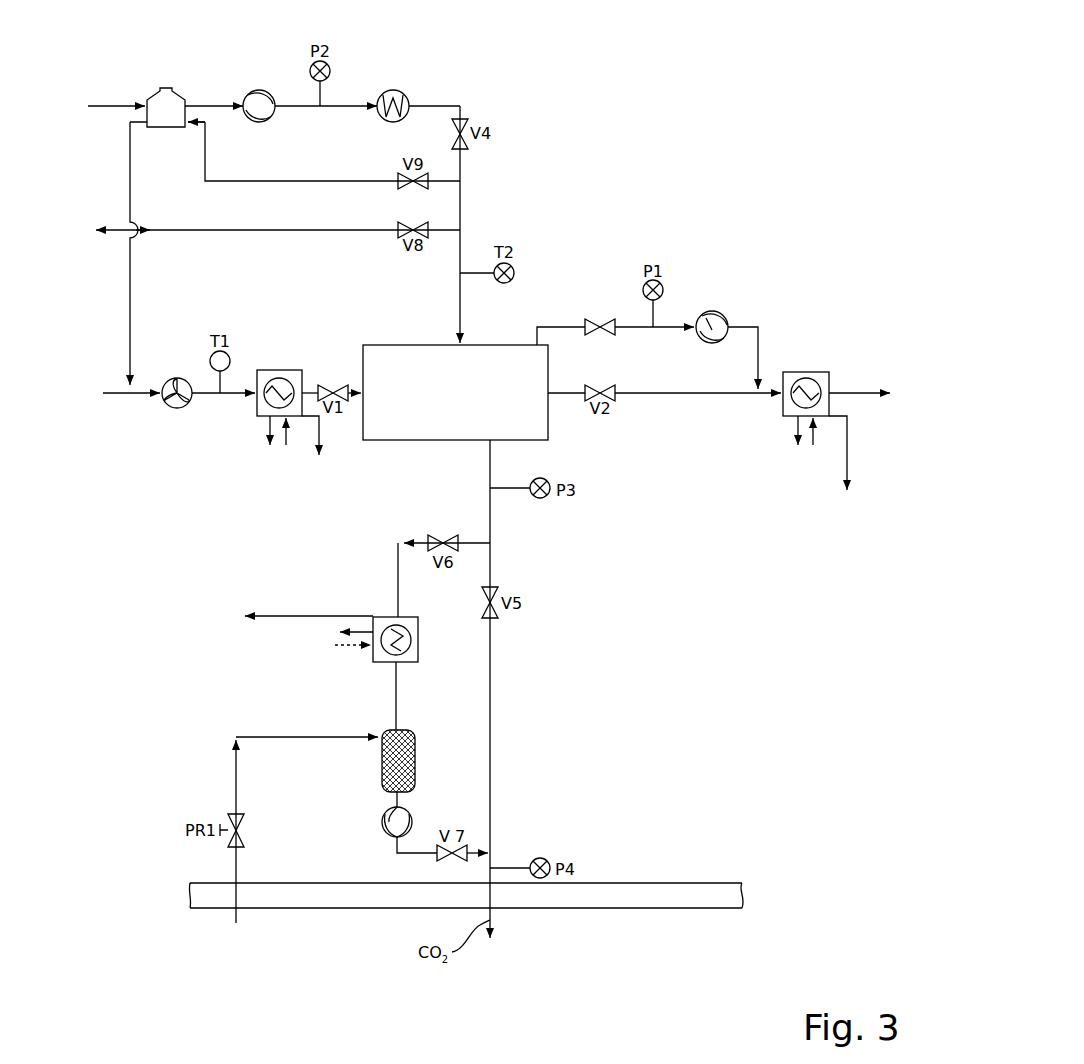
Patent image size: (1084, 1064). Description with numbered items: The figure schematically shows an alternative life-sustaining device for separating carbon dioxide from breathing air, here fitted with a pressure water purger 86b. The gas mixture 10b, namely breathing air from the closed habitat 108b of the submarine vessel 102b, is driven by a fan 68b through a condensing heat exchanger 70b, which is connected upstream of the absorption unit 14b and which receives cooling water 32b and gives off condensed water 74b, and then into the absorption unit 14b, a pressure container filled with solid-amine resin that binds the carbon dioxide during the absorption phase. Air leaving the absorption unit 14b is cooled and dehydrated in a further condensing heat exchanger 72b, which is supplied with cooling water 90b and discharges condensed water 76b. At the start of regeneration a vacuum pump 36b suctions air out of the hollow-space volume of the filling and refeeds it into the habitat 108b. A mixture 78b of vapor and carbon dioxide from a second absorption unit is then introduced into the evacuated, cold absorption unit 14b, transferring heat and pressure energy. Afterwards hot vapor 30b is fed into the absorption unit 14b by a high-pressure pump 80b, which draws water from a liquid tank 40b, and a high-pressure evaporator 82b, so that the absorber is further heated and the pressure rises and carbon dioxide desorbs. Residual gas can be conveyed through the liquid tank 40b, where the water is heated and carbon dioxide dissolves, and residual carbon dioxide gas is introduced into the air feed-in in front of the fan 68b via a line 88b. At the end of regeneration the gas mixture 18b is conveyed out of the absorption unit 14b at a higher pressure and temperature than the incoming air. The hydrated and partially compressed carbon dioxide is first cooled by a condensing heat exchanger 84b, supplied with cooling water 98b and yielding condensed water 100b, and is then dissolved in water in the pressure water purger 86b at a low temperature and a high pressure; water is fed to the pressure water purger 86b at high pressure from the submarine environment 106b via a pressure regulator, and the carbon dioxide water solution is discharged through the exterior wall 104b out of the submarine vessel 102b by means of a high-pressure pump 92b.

The gas mixture 10b is at (113, 396).
The absorption unit 14b is at (478, 407).
The gas mixture 18b is at (491, 682).
The hot vapor 30b is at (461, 245).
The cooling water 32b is at (265, 430).
The vacuum pump 36b is at (713, 310).
The liquid tank 40b is at (166, 98).
The fan 68b is at (175, 408).
The condensing heat exchanger 70b is at (272, 371).
The condensing heat exchanger 72b is at (822, 371).
The condensed water 74b is at (325, 442).
The condensed water 76b is at (846, 467).
The mixture of vapor and carbon dioxide 78b is at (202, 233).
The high-pressure pump 80b is at (257, 98).
The high-pressure evaporator 82b is at (392, 90).
The condensing heat exchanger 84b is at (372, 656).
The pressure water purger 86b is at (398, 765).
The line 88b is at (131, 195).
The cooling water 90b is at (797, 430).
The high-pressure pump 92b is at (383, 824).
The cooling water 98b is at (355, 648).
The condensed water 100b is at (306, 615).
The submarine vessel 102b is at (194, 913).
The exterior wall 104b is at (744, 893).
The submarine environment 106b is at (718, 961).
The habitat 108b is at (718, 867).